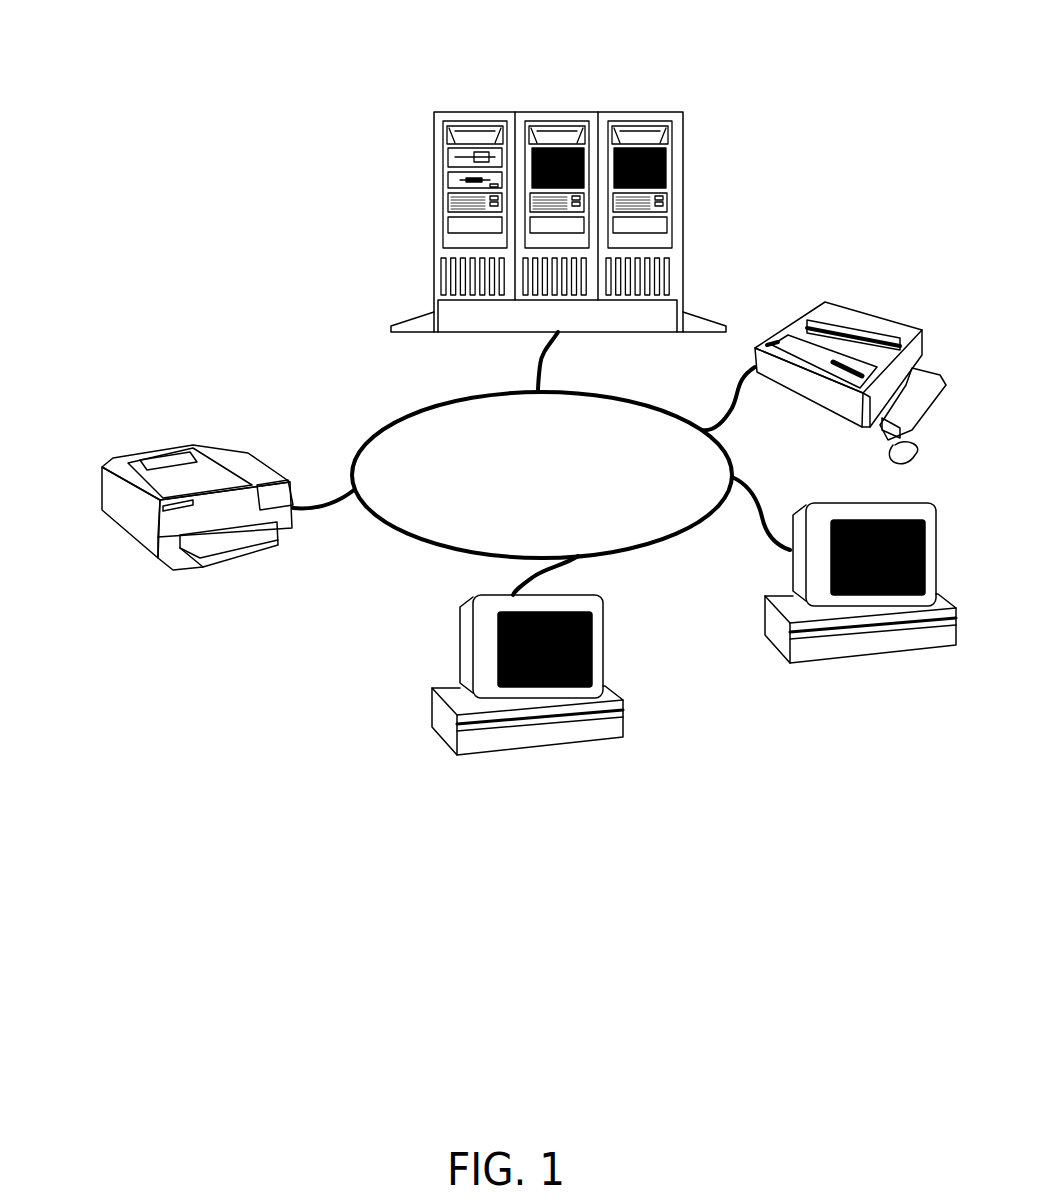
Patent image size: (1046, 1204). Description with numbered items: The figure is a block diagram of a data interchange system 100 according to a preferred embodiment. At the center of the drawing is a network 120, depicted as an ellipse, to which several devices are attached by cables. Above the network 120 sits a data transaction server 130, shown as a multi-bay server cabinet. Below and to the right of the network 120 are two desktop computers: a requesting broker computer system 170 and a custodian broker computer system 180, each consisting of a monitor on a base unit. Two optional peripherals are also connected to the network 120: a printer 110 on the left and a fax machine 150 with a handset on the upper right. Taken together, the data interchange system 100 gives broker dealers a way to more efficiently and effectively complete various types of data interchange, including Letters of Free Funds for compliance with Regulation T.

The data interchange system 100 is at (300, 58).
The printer 110 is at (112, 462).
The network 120 is at (460, 400).
The data transaction server 130 is at (456, 112).
The fax machine 150 is at (820, 305).
The requesting broker computer system 170 is at (437, 688).
The custodian broker computer system 180 is at (772, 596).